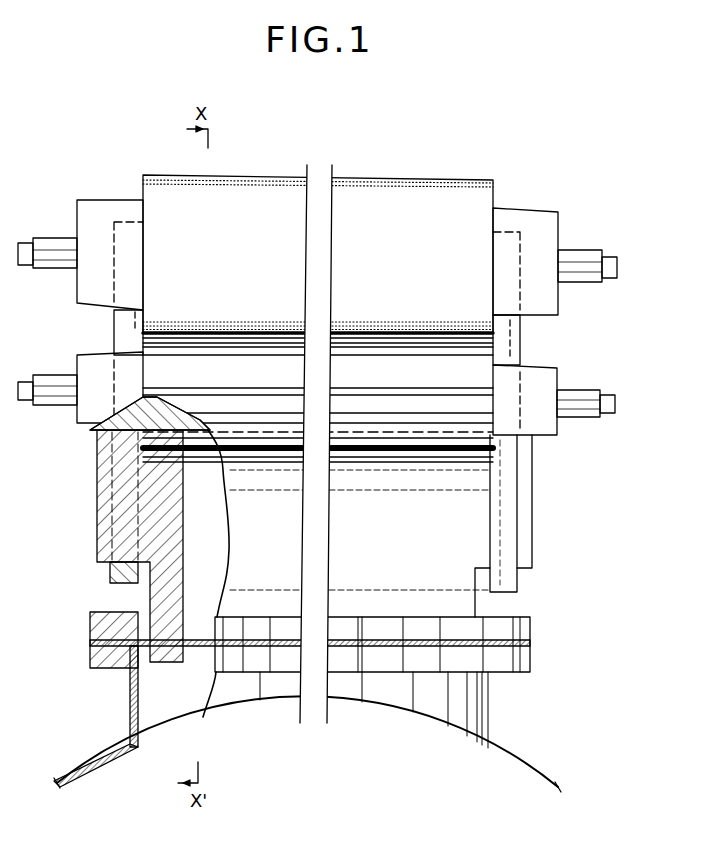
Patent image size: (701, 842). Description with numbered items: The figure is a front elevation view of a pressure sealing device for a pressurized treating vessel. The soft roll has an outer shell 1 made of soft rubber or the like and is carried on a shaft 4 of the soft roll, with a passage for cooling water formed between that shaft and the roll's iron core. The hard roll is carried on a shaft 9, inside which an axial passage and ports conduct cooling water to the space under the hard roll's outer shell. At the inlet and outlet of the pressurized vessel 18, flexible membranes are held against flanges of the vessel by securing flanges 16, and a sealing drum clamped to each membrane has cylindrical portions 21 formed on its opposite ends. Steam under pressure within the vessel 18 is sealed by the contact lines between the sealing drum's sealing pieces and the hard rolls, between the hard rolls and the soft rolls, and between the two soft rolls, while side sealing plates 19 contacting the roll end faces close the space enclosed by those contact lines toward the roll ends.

The outer shell of soft roll 1 is at (237, 176).
The shaft of the soft roll 4 is at (58, 238).
The shaft of the hard roll 9 is at (57, 376).
The side sealing plate 19 is at (112, 343).
The cylindrical portion 21 is at (95, 503).
The securing flange 16 is at (88, 612).
The pressurized vessel 18 is at (108, 757).